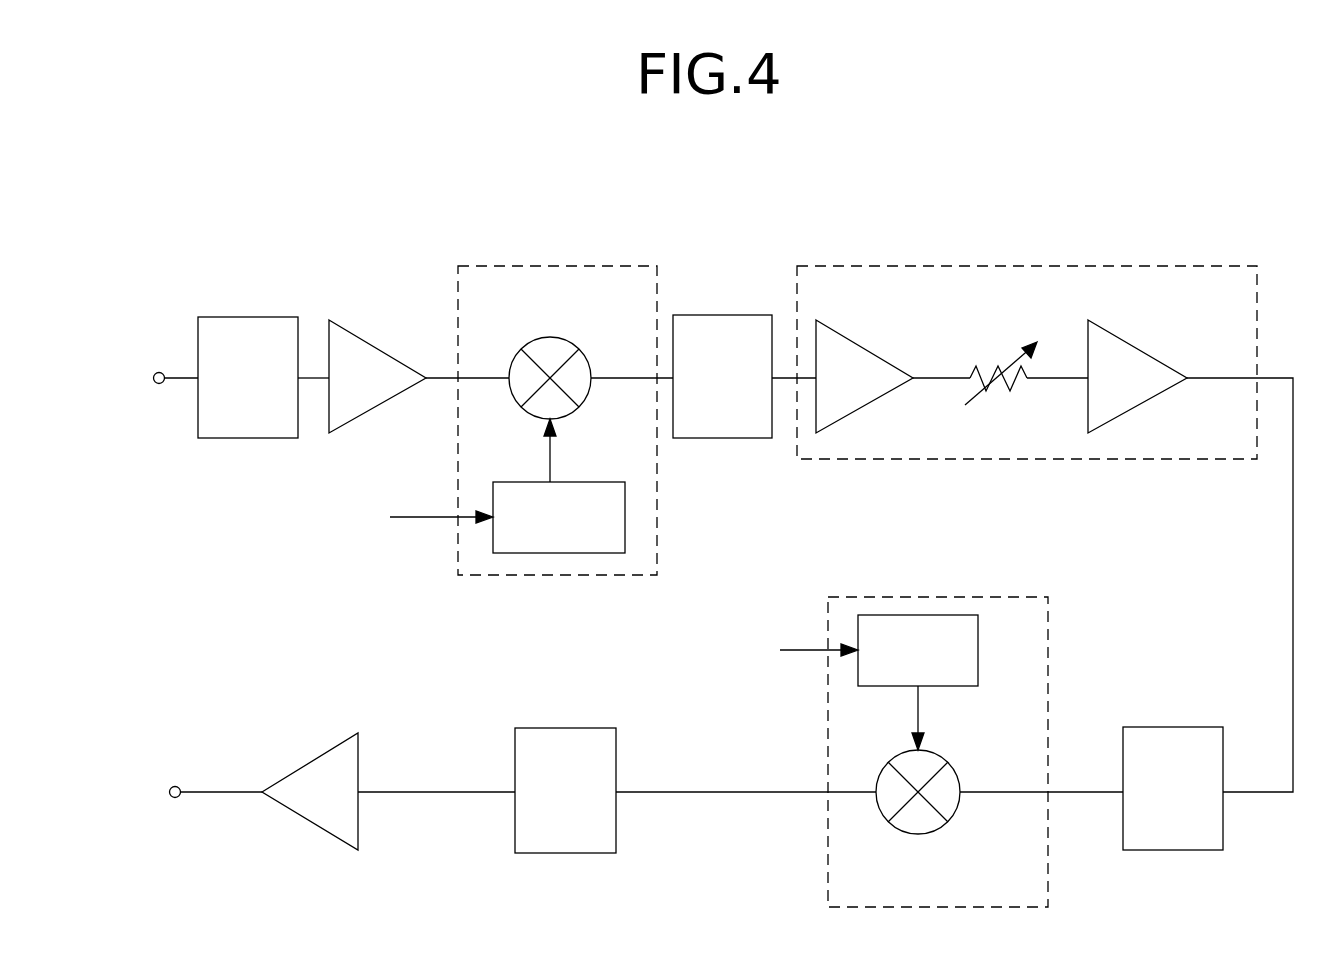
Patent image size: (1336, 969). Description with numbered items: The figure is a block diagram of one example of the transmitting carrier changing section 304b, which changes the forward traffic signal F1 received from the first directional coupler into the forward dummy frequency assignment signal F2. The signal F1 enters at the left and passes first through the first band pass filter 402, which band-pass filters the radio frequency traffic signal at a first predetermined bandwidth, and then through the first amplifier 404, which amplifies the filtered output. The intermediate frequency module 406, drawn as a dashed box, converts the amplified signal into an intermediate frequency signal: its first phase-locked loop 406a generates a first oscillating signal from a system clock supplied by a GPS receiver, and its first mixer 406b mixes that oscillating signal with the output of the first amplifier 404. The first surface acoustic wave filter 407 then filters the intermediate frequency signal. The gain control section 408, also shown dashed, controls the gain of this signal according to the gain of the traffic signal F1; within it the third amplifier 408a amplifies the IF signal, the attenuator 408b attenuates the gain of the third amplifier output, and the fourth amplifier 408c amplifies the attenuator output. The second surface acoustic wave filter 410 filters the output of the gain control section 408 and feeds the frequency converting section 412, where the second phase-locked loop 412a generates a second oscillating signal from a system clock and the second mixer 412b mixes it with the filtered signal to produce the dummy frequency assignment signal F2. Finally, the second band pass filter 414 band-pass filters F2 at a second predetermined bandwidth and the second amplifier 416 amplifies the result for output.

The transmitting carrier changing section 304b is at (376, 168).
The first band pass filter 402 is at (253, 317).
The first amplifier 404 is at (386, 353).
The intermediate frequency module 406 is at (511, 266).
The first phase-locked loop 406a is at (574, 482).
The first mixer 406b is at (547, 338).
The first surface acoustic wave filter 407 is at (697, 315).
The gain control section 408 is at (1196, 266).
The third amplifier 408a is at (872, 353).
The attenuator 408b is at (994, 350).
The fourth amplifier 408c is at (1146, 353).
The second surface acoustic wave filter 410 is at (1170, 727).
The frequency converting section 412 is at (993, 597).
The second phase-locked loop 412a is at (940, 690).
The second mixer 412b is at (940, 830).
The second band pass filter 414 is at (551, 728).
The second amplifier 416 is at (300, 768).